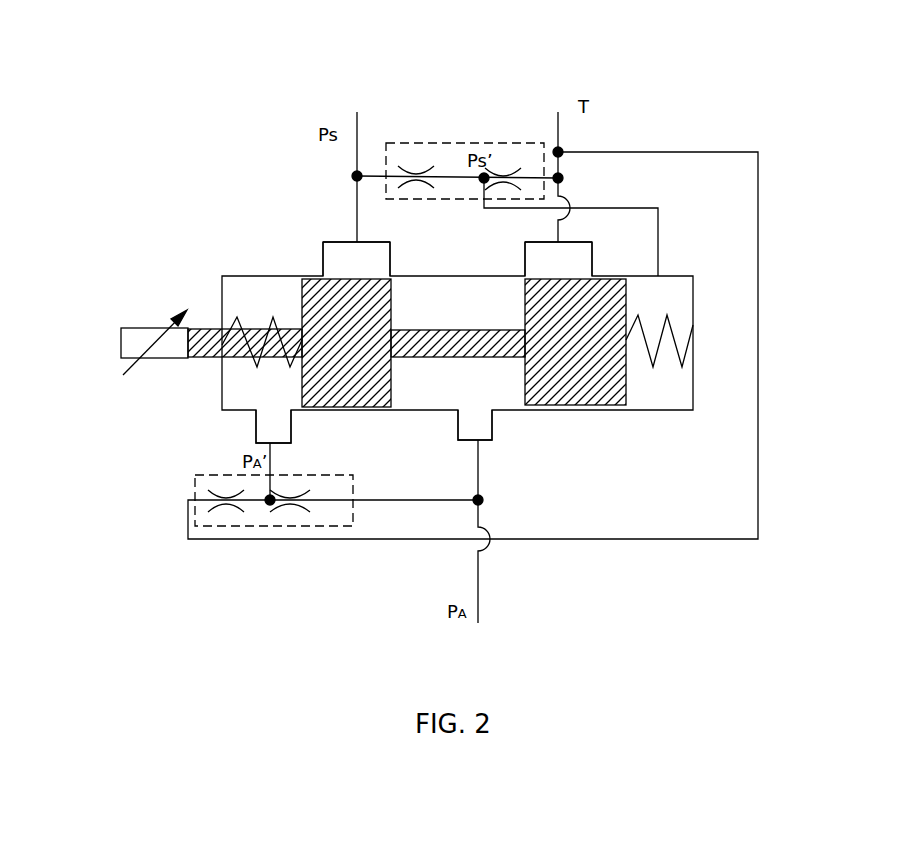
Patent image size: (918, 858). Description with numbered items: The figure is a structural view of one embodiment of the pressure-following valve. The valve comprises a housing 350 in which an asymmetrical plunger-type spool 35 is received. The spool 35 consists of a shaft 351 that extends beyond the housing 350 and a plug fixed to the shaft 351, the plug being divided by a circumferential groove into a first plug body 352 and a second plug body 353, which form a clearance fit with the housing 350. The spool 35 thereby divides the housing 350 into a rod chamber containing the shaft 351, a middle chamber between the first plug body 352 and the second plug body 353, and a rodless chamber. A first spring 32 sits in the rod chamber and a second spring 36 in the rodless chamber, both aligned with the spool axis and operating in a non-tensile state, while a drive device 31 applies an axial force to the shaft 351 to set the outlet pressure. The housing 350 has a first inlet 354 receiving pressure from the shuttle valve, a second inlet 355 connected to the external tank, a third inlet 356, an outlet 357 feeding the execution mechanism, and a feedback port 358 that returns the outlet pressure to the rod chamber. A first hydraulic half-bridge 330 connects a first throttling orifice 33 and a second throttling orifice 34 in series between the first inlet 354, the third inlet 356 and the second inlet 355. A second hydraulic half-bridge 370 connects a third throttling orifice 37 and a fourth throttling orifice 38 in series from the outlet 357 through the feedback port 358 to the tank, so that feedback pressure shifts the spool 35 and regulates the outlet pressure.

The drive device 31 is at (154, 328).
The first spring 32 is at (271, 327).
The first throttling orifice 33 is at (416, 172).
The second throttling orifice 34 is at (520, 170).
The spool 35 is at (581, 319).
The second spring 36 is at (658, 348).
The third throttling orifice 37 is at (325, 502).
The fourth throttling orifice 38 is at (227, 503).
The first hydraulic half-bridge 330 is at (462, 101).
The housing 350 is at (220, 397).
The shaft 351 is at (200, 357).
The first plug body 352 is at (322, 392).
The second plug body 353 is at (567, 392).
The first inlet 354 is at (355, 252).
The second inlet 355 is at (537, 268).
The third inlet 356 is at (657, 273).
The outlet 357 is at (475, 428).
The feedback port 358 is at (273, 415).
The second hydraulic half-bridge 370 is at (249, 546).